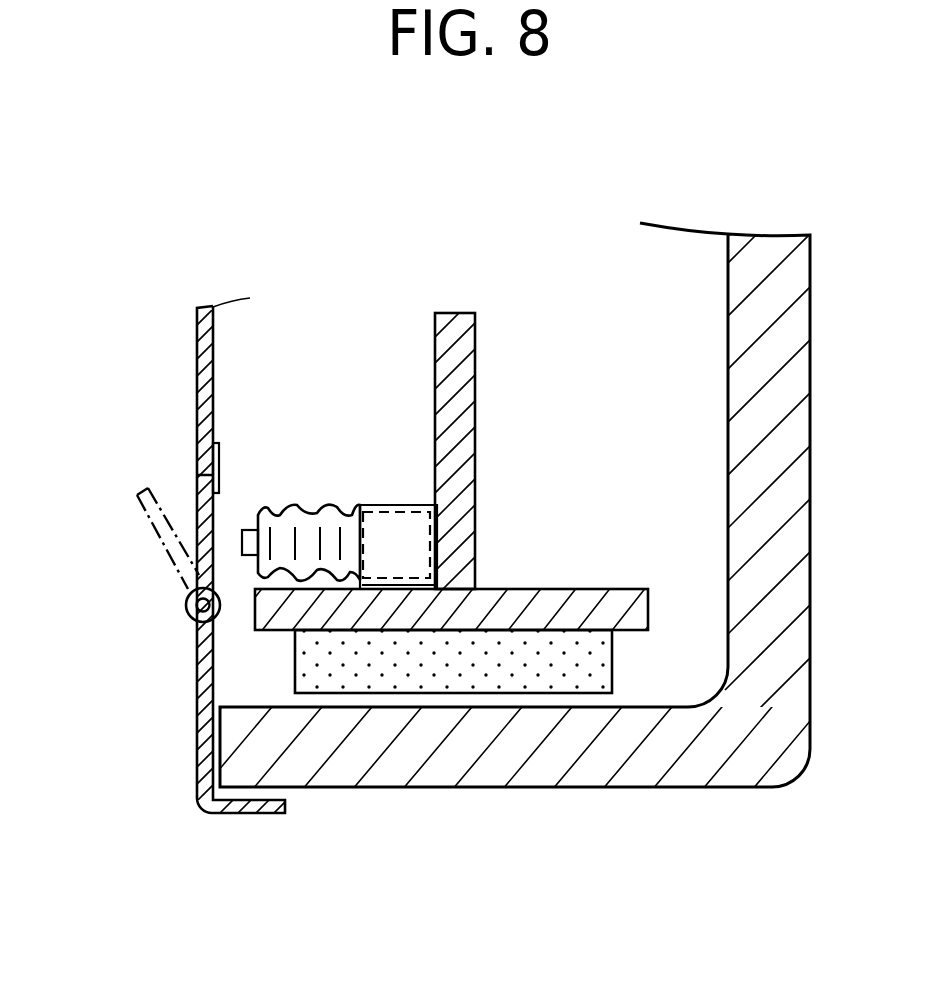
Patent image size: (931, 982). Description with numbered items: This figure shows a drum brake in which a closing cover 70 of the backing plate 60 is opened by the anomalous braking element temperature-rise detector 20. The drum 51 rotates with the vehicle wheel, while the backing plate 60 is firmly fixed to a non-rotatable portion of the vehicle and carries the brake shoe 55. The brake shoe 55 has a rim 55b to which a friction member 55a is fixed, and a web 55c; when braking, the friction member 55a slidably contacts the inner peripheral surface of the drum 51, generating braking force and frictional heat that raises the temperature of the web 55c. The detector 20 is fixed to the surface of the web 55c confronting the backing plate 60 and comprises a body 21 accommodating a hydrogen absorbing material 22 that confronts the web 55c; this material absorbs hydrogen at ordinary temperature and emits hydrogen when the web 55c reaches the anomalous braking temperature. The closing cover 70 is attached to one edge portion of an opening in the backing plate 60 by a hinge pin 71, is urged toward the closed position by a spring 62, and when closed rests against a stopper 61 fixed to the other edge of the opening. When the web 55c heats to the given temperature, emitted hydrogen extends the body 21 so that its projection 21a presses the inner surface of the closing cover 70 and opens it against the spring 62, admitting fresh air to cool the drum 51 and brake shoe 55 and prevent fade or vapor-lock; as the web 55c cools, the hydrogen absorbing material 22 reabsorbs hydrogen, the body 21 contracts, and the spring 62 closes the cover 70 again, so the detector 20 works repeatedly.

The drum 51 is at (622, 773).
The brake shoe 55 is at (470, 551).
The friction member 55a is at (432, 667).
The rim 55b is at (337, 620).
The web 55c is at (472, 310).
The anomalous braking element temperature-rise detector 20 is at (468, 484).
The hydrogen absorbing material 22 is at (403, 512).
The body 21 is at (303, 454).
The projection 21a is at (250, 525).
The backing plate 60 is at (178, 556).
The stopper 61 is at (222, 450).
The spring 62 is at (177, 636).
The closing cover 70 is at (172, 468).
The hinge pin 71 is at (186, 602).